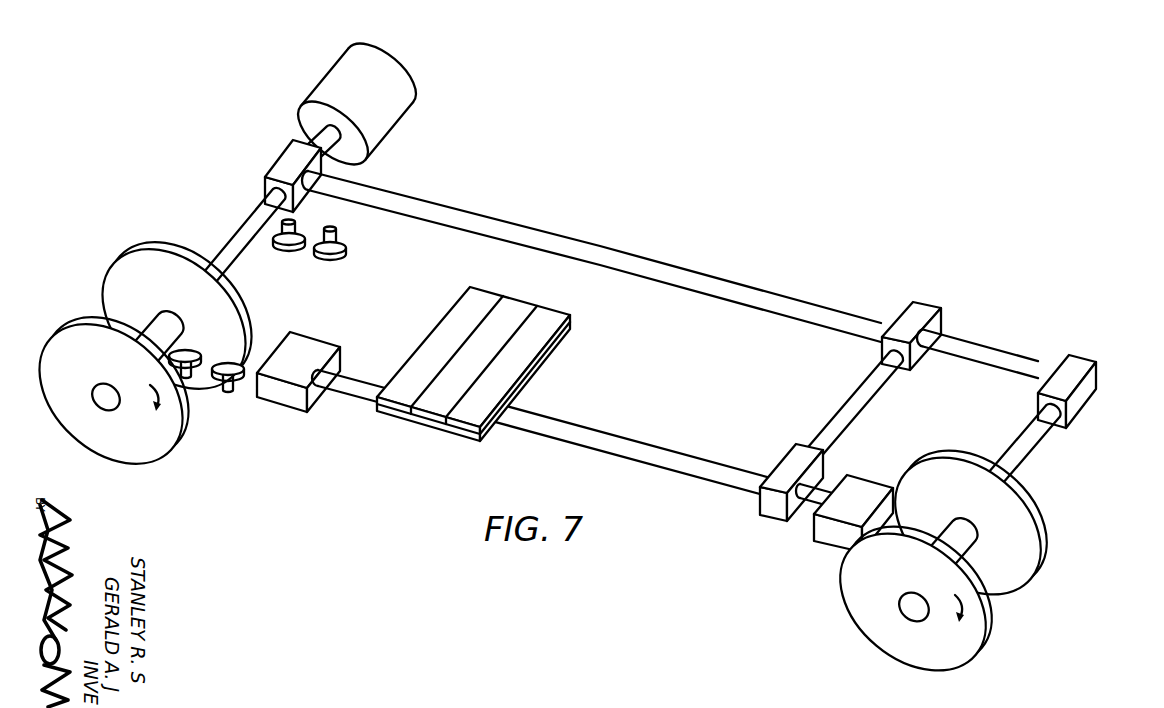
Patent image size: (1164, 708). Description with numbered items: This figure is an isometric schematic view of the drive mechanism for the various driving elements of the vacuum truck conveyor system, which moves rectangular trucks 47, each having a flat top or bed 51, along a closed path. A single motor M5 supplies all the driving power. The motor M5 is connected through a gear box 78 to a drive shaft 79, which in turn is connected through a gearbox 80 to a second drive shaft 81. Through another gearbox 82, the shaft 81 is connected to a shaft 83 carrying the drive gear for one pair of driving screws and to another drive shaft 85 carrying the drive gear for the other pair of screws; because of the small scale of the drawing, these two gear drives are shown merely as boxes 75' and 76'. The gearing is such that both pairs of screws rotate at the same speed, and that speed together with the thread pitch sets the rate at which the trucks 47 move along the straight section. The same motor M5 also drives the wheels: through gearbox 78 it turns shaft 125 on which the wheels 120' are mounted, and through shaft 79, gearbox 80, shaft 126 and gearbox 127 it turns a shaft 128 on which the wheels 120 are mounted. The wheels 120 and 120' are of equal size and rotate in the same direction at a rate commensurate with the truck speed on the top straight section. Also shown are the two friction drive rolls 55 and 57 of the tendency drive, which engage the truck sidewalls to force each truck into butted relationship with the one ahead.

The motor M5 is at (417, 79).
The gear box 78 is at (289, 153).
The shaft 125 is at (246, 228).
The drive shaft 79 is at (658, 261).
The wheels 120' is at (145, 352).
The friction drive roll 55 is at (278, 246).
The friction drive roll 57 is at (342, 254).
The gear drive box 75' is at (328, 366).
The drive shaft 85 is at (627, 454).
The truck bed 51 is at (522, 366).
The truck 47 is at (496, 289).
The gearbox 80 is at (914, 359).
The shaft 126 is at (993, 349).
The gearbox 127 is at (1080, 368).
The shaft 128 is at (1026, 453).
The second drive shaft 81 is at (852, 417).
The gearbox 82 is at (785, 456).
The shaft 83 is at (811, 506).
The gear drive box 76' is at (855, 506).
The wheels 120 is at (944, 561).